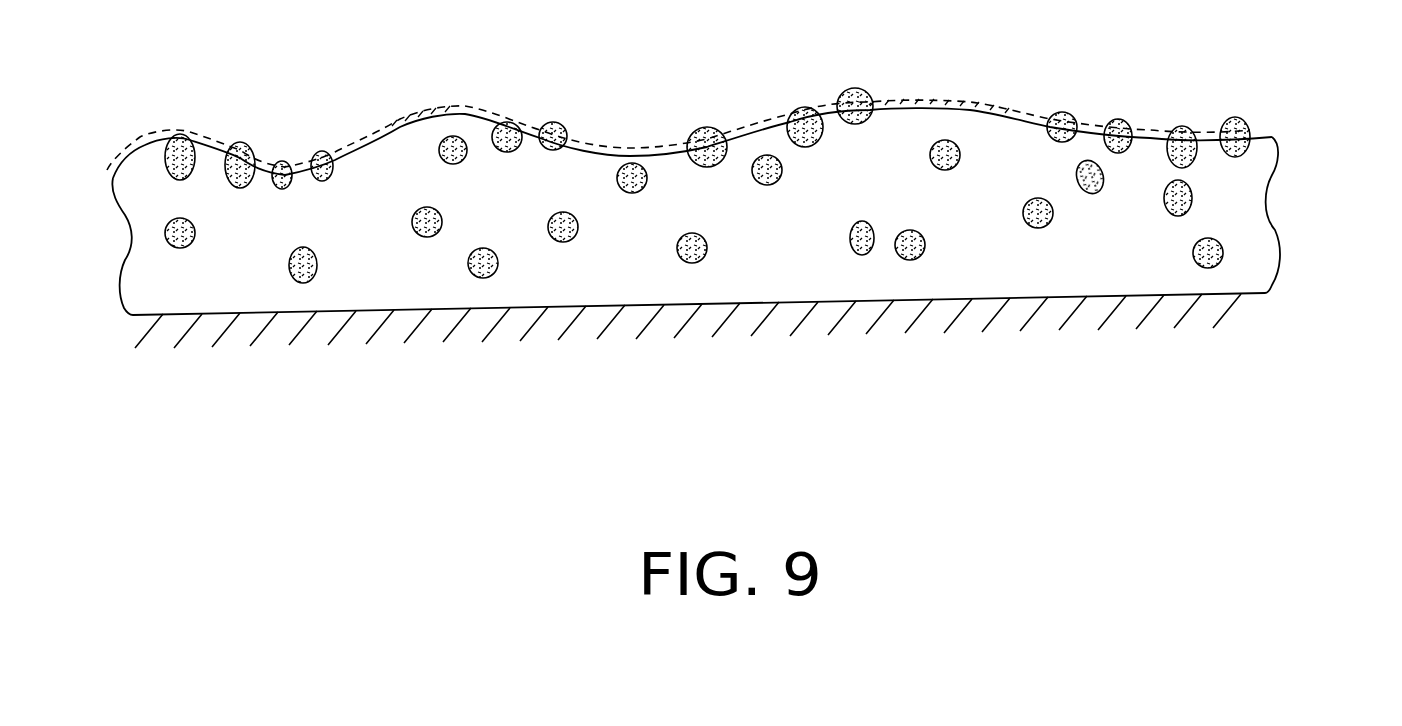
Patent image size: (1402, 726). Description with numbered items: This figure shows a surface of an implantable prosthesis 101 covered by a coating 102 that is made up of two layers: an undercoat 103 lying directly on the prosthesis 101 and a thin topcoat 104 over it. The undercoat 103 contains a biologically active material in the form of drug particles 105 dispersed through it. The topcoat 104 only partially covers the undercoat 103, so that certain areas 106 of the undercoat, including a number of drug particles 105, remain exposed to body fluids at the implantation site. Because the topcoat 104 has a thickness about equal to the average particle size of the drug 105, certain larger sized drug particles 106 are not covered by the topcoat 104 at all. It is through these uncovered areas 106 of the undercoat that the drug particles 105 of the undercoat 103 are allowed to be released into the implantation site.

The prosthesis 101 is at (612, 360).
The coating 102 is at (1232, 194).
The undercoat 103 is at (1022, 268).
The topcoat 104 is at (398, 117).
The drug particles 105 is at (500, 240).
The uncovered areas of the undercoat 106 is at (878, 74).